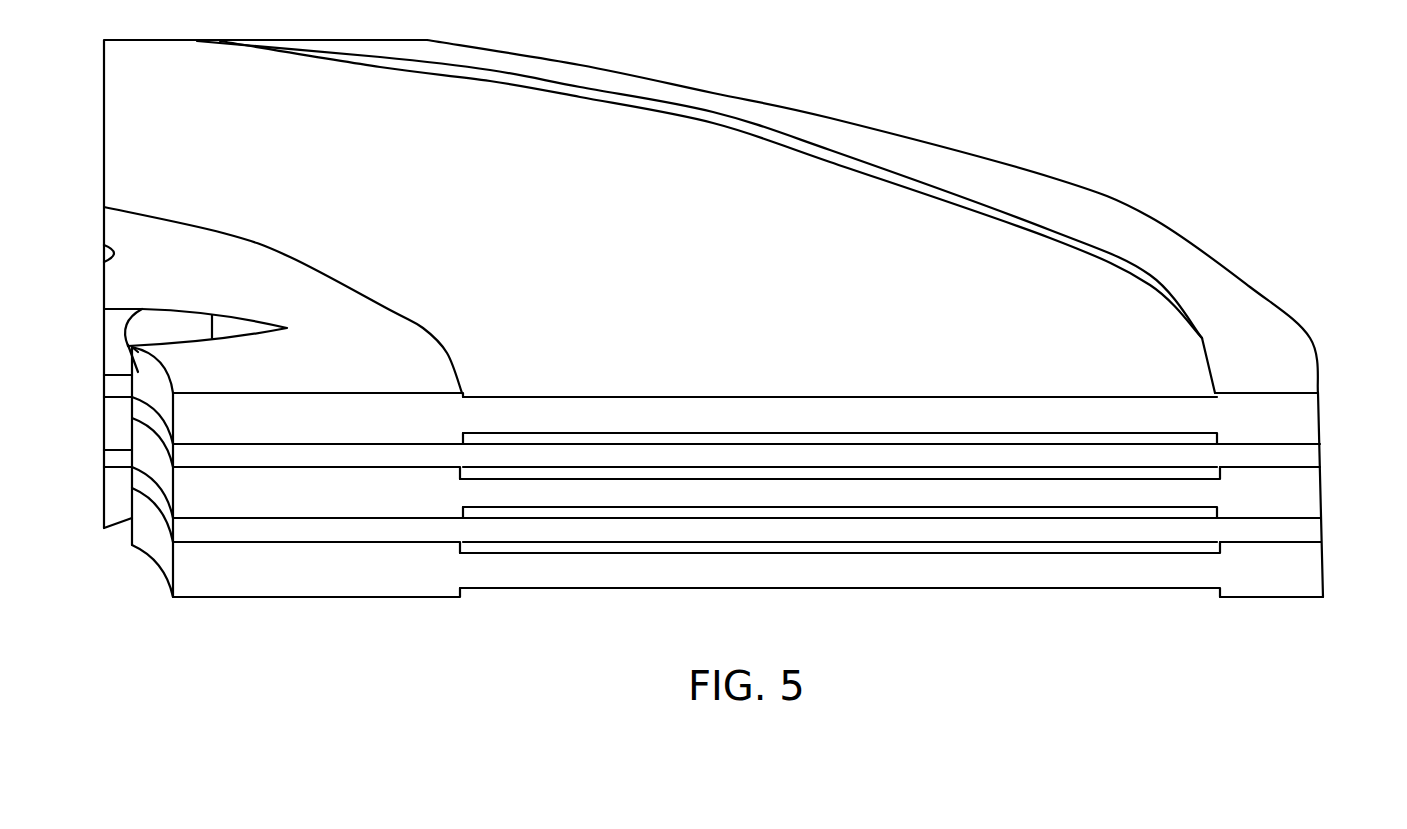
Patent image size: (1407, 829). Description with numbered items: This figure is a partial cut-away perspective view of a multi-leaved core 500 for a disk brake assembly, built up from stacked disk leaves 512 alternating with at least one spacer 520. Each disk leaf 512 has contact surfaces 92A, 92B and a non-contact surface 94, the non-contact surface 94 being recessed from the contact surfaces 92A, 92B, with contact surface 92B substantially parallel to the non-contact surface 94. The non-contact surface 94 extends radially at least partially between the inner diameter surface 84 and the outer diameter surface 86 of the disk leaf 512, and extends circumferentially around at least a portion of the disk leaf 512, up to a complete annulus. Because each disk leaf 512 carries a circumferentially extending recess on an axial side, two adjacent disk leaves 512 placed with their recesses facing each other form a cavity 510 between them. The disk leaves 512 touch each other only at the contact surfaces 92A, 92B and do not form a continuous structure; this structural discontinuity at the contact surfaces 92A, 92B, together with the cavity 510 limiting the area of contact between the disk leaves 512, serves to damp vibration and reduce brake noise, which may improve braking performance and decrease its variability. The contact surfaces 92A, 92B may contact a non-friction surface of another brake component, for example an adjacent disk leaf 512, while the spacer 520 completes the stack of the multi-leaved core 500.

The multi-leaved core 500 is at (1112, 164).
The inner diameter surface 84 is at (128, 345).
The outer diameter surface 86 is at (1322, 368).
The contact surface 92A is at (1265, 445).
The contact surface 92B is at (298, 444).
The non-contact surface 94 is at (765, 432).
The cavity 510 is at (960, 440).
The disk leaf 512 is at (1310, 414).
The spacer 520 is at (1310, 456).